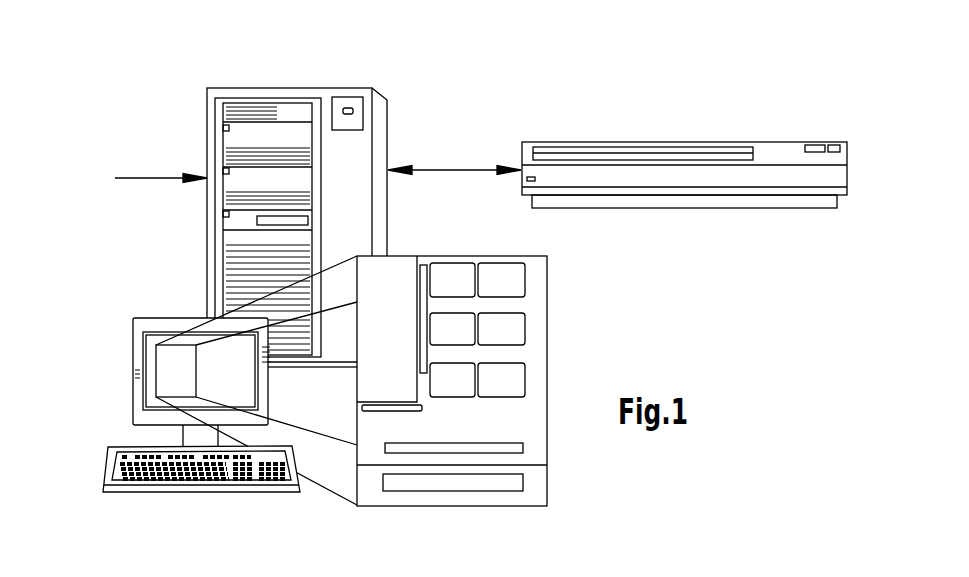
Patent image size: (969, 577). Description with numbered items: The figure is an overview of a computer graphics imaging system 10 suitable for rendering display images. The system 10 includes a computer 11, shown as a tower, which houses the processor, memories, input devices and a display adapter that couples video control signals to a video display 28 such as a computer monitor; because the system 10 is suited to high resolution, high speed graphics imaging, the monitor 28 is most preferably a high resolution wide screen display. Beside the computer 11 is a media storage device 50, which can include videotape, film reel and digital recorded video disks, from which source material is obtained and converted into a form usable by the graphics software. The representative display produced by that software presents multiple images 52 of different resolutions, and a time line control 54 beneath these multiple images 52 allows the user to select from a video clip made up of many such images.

The computer graphics imaging system 10 is at (449, 94).
The computer 11 is at (280, 88).
The video display 28 is at (132, 393).
The media storage device 50 is at (628, 147).
The multiple images 52 is at (517, 406).
The time line control 54 is at (455, 485).